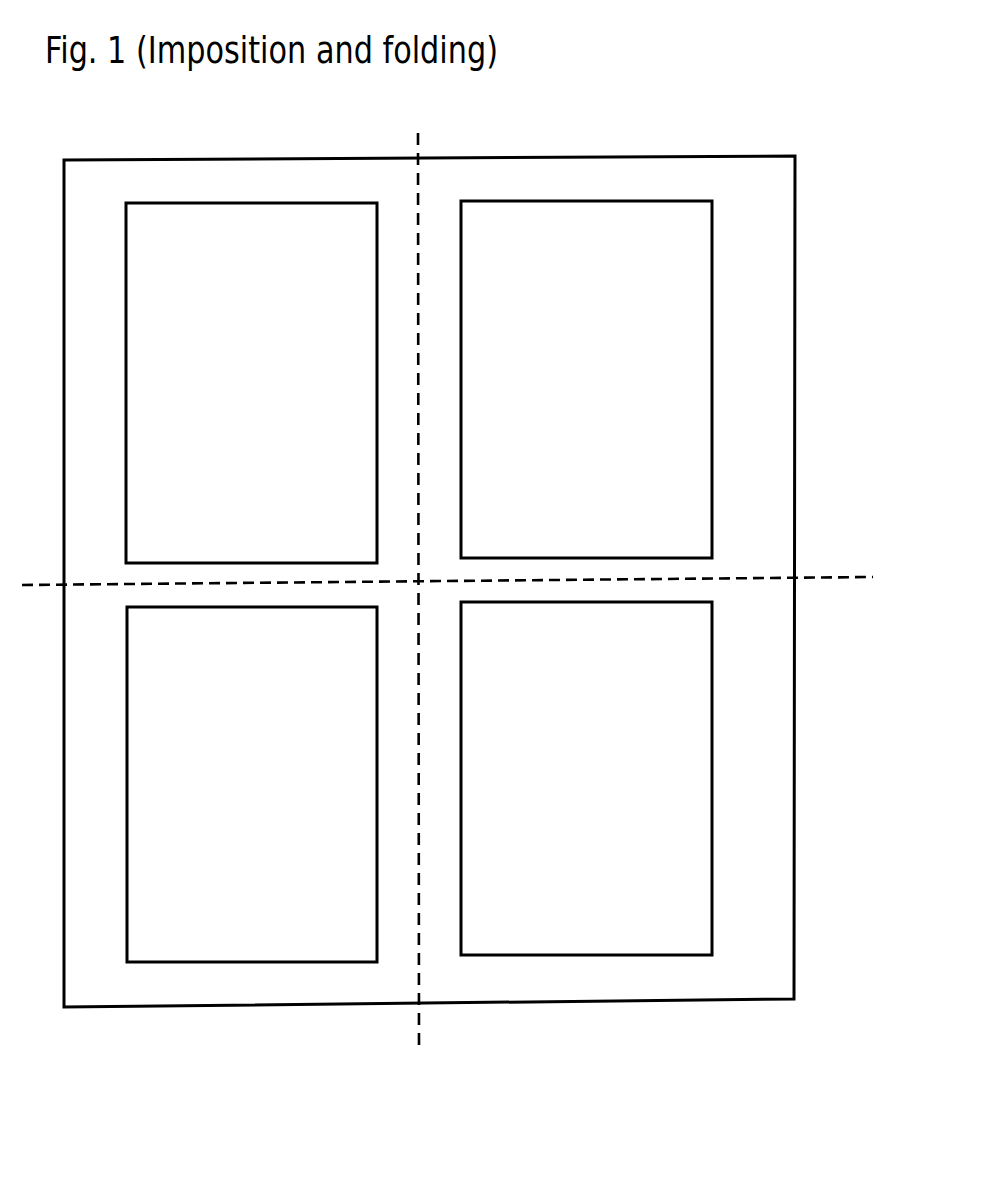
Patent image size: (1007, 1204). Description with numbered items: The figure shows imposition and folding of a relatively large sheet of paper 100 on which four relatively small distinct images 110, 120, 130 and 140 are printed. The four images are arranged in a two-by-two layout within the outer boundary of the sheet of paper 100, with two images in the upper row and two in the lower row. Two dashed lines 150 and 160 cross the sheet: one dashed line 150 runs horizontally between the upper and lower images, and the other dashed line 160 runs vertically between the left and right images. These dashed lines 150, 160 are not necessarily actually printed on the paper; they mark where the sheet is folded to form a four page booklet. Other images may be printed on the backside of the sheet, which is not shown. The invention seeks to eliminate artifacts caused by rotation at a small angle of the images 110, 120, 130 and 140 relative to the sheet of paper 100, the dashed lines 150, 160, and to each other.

The sheet of paper 100 is at (795, 313).
The distinct image 110 is at (562, 807).
The distinct image 120 is at (521, 428).
The distinct image 130 is at (228, 383).
The distinct image 140 is at (210, 810).
The dashed line 150 is at (833, 577).
The dashed line 160 is at (418, 207).